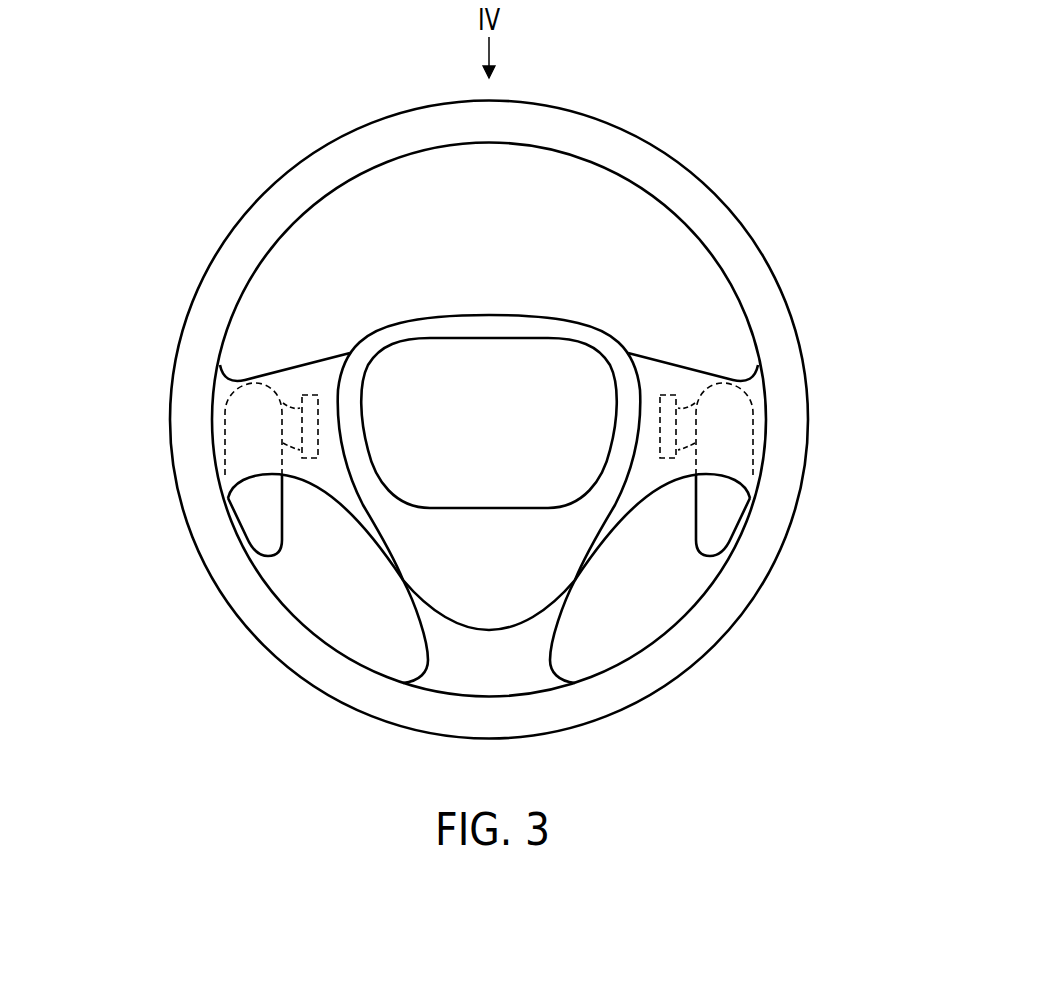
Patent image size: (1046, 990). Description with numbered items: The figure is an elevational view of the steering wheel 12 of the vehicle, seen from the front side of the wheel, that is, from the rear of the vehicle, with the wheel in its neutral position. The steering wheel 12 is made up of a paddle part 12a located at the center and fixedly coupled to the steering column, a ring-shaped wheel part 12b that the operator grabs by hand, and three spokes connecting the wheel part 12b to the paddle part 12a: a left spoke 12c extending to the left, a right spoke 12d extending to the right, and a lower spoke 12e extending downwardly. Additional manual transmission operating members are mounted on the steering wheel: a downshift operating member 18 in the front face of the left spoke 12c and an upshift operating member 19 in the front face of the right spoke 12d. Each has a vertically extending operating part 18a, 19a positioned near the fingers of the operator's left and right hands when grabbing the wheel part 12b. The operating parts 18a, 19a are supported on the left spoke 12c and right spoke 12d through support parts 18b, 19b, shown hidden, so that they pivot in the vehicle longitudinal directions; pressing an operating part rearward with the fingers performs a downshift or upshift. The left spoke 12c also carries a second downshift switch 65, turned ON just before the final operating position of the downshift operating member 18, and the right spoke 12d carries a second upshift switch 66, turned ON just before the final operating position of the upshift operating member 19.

The steering wheel 12 is at (650, 100).
The paddle part 12a is at (488, 315).
The wheel part 12b is at (685, 194).
The left spoke 12c is at (315, 378).
The right spoke 12d is at (658, 378).
The lower spoke 12e is at (513, 657).
The downshift operating member 18 is at (250, 548).
The operating part 18a is at (263, 507).
The support part 18b is at (318, 428).
The upshift operating member 19 is at (728, 545).
The operating part 19a is at (710, 505).
The support part 19b is at (683, 428).
The second downshift switch 65 is at (310, 458).
The second upshift switch 66 is at (667, 460).